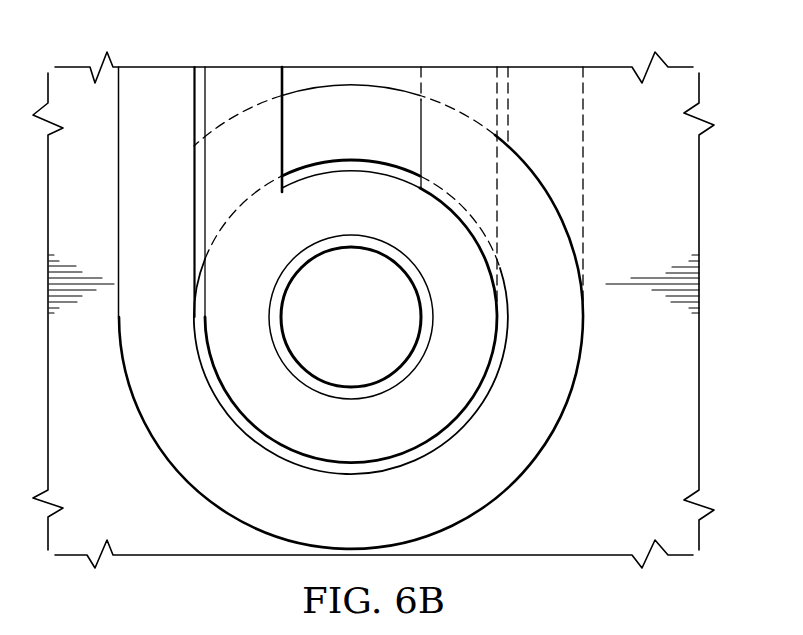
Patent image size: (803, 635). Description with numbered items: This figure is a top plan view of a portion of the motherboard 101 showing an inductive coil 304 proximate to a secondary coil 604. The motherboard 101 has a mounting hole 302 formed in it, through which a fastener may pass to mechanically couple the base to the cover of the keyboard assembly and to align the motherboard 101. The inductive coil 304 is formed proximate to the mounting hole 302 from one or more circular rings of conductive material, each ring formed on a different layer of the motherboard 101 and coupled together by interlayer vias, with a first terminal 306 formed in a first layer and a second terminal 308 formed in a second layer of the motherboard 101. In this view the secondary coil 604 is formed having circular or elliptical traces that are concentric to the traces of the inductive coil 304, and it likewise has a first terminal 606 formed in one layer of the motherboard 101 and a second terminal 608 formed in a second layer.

The motherboard 101 is at (690, 222).
The mounting hole 302 is at (373, 346).
The inductive coil 304 is at (351, 229).
The first terminal 306 is at (243, 78).
The second terminal 308 is at (458, 78).
The secondary coil 604 is at (573, 333).
The first terminal 606 is at (143, 413).
The second terminal 608 is at (583, 150).